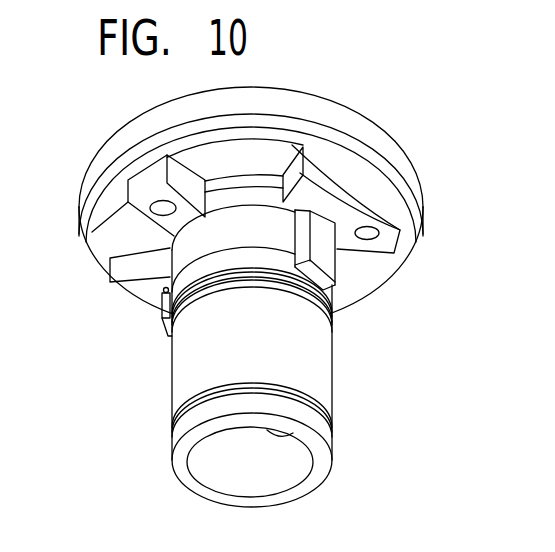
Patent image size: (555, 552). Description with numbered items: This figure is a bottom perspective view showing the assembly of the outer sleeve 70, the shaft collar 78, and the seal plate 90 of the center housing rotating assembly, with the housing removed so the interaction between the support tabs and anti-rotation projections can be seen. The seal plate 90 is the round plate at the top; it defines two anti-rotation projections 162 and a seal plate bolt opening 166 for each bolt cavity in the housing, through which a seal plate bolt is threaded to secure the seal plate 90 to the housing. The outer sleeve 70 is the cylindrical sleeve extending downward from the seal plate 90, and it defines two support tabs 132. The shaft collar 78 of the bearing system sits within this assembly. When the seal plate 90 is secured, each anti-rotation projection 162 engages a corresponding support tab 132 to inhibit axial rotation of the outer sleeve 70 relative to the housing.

The seal plate 90 is at (370, 112).
The shaft collar 78 is at (246, 196).
The seal plate bolt opening 166 is at (162, 208).
The anti-rotation projection 162 is at (327, 257).
The support tab 132 is at (332, 306).
The outer sleeve 70 is at (314, 367).